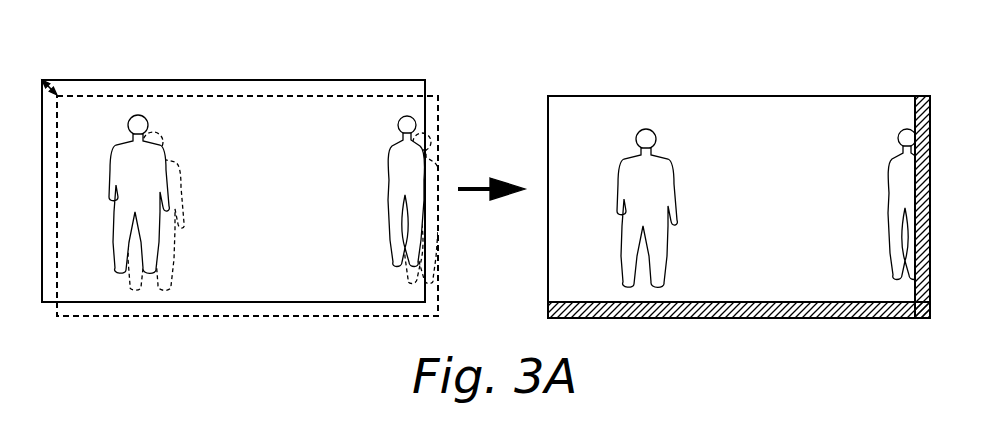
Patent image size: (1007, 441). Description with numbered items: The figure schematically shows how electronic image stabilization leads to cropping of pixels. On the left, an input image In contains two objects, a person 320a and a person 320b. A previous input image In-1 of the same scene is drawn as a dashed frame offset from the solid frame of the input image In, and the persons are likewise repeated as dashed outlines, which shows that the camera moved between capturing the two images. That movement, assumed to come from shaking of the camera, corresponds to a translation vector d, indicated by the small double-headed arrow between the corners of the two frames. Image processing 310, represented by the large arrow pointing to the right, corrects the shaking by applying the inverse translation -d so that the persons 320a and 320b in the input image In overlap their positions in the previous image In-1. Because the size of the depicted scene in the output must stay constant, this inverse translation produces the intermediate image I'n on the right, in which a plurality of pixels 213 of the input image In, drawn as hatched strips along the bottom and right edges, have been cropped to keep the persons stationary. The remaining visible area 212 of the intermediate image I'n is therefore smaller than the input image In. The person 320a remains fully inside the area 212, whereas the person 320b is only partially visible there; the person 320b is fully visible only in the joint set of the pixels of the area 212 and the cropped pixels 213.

The remaining visible area 212 is at (778, 108).
The cropped pixels 213 is at (736, 322).
The image processing 310 is at (469, 193).
The person 320a is at (132, 178).
The person 320b is at (400, 163).
The translation vector d is at (50, 84).
The input image In is at (425, 80).
The previous input image In-1 is at (438, 96).
The intermediate image I'n is at (611, 59).